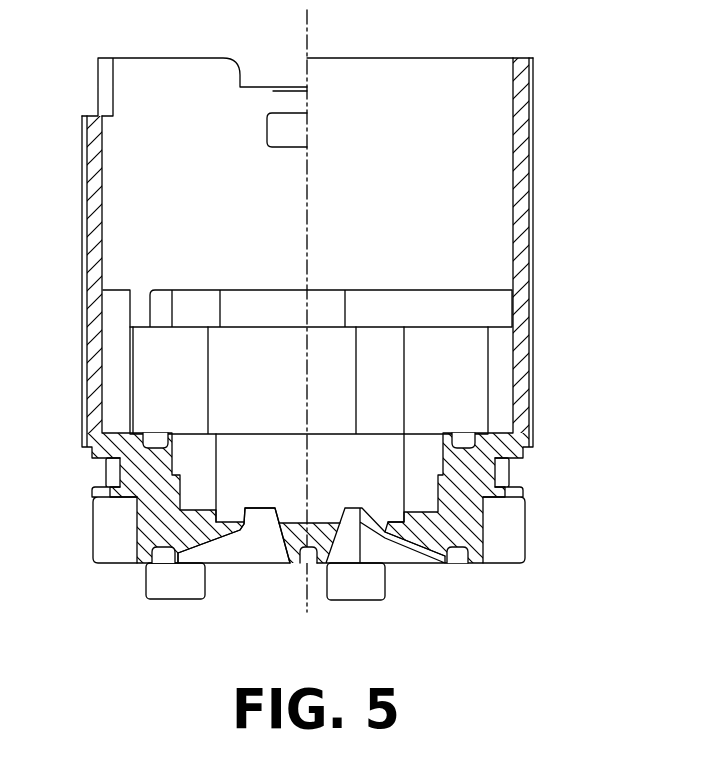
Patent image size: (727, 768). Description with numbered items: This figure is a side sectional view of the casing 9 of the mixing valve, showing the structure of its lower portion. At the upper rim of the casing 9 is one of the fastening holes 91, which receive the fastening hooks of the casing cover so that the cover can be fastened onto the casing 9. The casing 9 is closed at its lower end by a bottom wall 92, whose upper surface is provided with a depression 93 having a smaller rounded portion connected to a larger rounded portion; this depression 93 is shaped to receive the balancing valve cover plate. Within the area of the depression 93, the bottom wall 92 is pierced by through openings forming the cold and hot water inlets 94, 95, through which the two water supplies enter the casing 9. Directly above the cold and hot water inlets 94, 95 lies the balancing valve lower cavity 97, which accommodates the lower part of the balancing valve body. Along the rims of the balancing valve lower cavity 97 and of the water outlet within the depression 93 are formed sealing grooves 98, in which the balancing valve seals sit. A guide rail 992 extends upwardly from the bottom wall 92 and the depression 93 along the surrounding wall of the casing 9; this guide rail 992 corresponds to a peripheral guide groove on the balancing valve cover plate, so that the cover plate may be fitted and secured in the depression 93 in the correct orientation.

The casing 9 is at (545, 243).
The fastening holes 91 is at (300, 120).
The bottom wall 92 is at (170, 433).
The depression 93 is at (242, 376).
The cold water inlet 94 is at (262, 526).
The hot water inlet 95 is at (357, 528).
The balancing valve lower cavity 97 is at (290, 470).
The sealing grooves 98 is at (462, 432).
The guide rail 992 is at (113, 317).